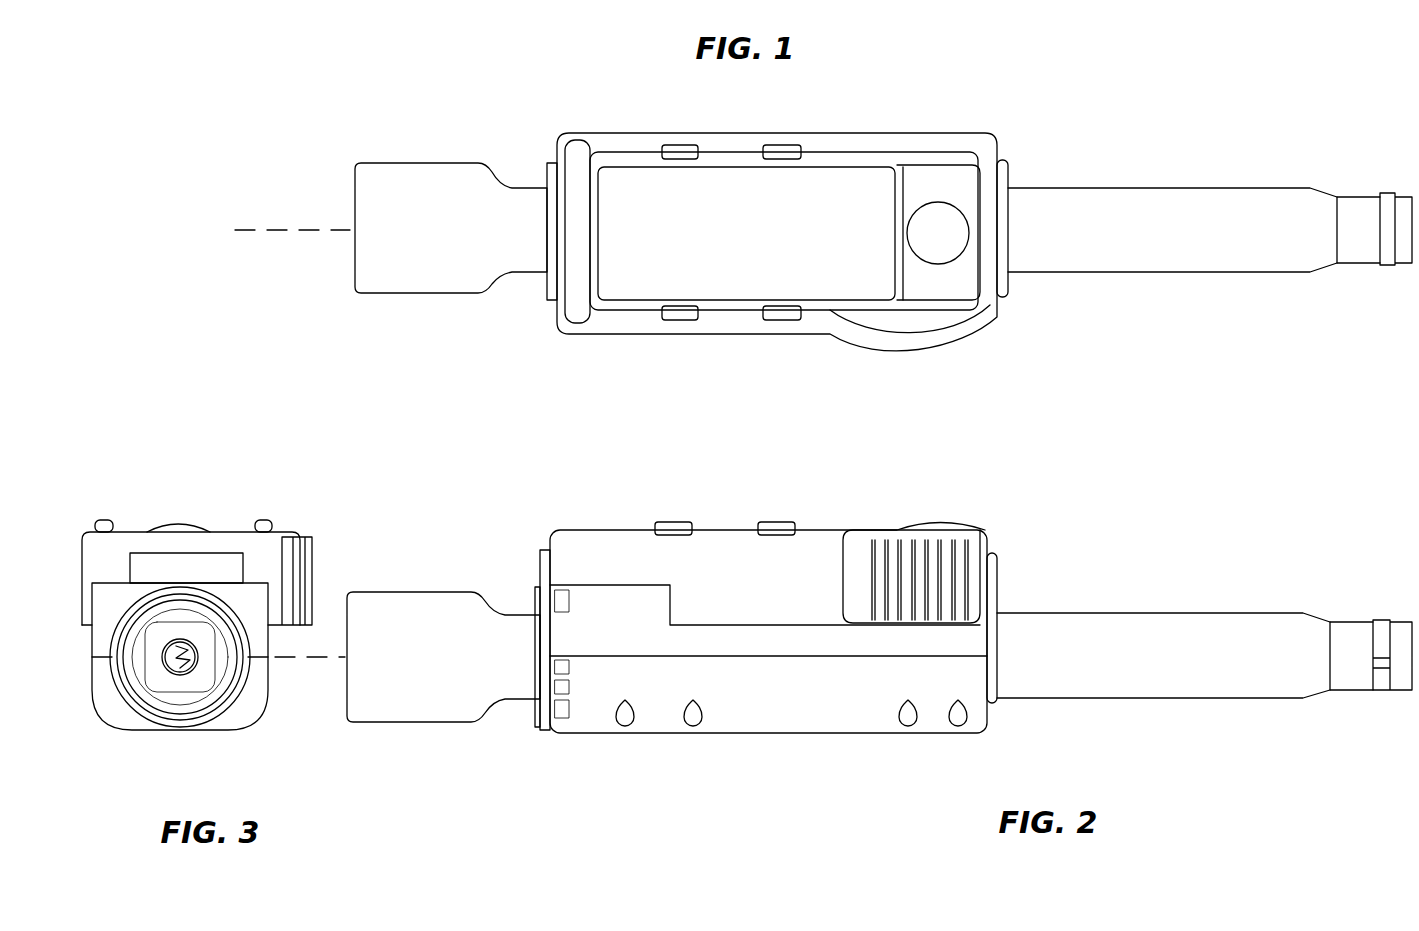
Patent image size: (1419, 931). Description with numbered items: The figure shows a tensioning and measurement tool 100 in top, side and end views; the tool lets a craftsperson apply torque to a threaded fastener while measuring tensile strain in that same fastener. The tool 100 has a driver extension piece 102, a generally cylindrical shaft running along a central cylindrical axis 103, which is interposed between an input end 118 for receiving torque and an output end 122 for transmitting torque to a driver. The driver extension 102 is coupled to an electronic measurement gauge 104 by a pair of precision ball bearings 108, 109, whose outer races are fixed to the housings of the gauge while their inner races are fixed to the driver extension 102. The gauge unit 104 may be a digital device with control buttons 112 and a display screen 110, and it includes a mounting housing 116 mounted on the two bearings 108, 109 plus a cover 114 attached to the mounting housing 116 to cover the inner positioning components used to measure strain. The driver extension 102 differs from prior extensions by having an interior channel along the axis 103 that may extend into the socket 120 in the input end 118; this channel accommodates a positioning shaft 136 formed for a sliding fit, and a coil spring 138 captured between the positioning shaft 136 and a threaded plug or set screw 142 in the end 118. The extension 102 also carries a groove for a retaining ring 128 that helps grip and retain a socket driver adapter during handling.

In FIG. 1, the tensioning and measurement tool 100 is at (1062, 52).
In FIG. 2, the tensioning and measurement tool 100 is at (1032, 492).
In FIG. 3, the tensioning and measurement tool 100 is at (155, 464).
In FIG. 1, the driver extension piece 102 is at (1137, 246).
In FIG. 2, the driver extension piece 102 is at (1155, 643).
In FIG. 1, the central cylindrical axis 103 is at (283, 228).
In FIG. 2, the central cylindrical axis 103 is at (330, 656).
In FIG. 1, the electronic measurement gauge 104 is at (860, 138).
In FIG. 2, the electronic measurement gauge 104 is at (777, 752).
In FIG. 3, the electronic measurement gauge 104 is at (255, 715).
In FIG. 1, the precision ball bearing 108 is at (545, 158).
In FIG. 2, the precision ball bearing 108 is at (546, 725).
In FIG. 3, the precision ball bearing 108 is at (217, 615).
In FIG. 1, the precision ball bearing 109 is at (1006, 180).
In FIG. 2, the precision ball bearing 109 is at (993, 720).
In FIG. 1, the display screen 110 is at (858, 330).
In FIG. 1, the control buttons 112 is at (792, 151).
In FIG. 2, the control buttons 112 is at (767, 522).
In FIG. 2, the cover 114 is at (813, 700).
In FIG. 2, the mounting housing 116 is at (615, 622).
In FIG. 1, the input end 118 is at (416, 268).
In FIG. 2, the input end 118 is at (401, 612).
In FIG. 3, the input end 118 is at (225, 708).
In FIG. 3, the socket 120 is at (185, 712).
In FIG. 2, the output end 122 is at (1355, 622).
In FIG. 1, the retaining ring 128 is at (1385, 270).
In FIG. 2, the retaining ring 128 is at (1383, 693).
In FIG. 3, the positioning shaft 136 is at (198, 665).
In FIG. 3, the coil spring 138 is at (188, 640).
In FIG. 3, the threaded plug or set screw 142 is at (163, 672).